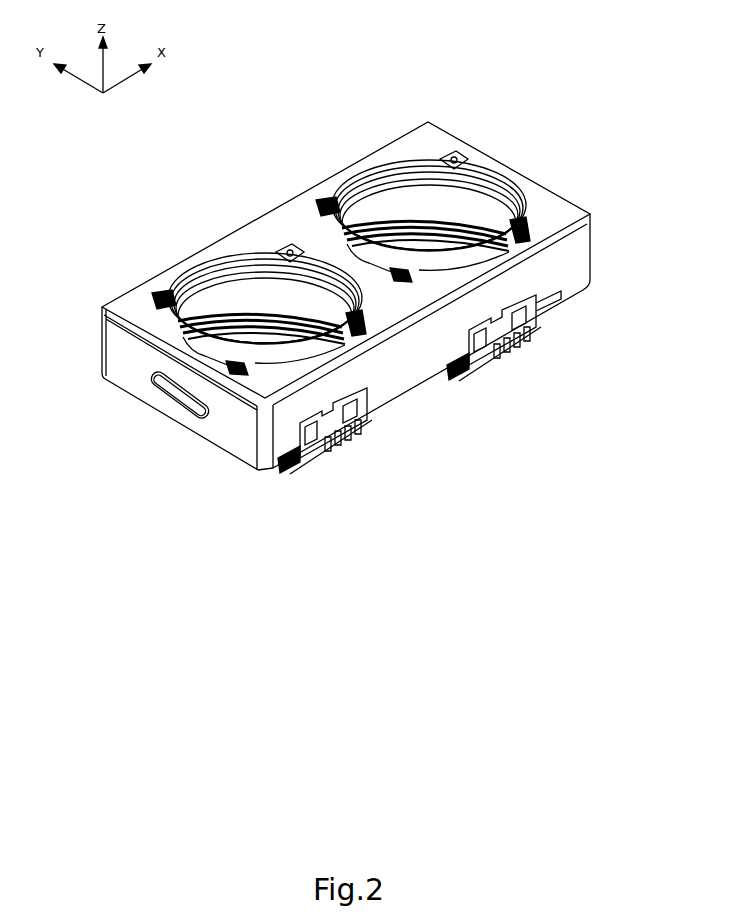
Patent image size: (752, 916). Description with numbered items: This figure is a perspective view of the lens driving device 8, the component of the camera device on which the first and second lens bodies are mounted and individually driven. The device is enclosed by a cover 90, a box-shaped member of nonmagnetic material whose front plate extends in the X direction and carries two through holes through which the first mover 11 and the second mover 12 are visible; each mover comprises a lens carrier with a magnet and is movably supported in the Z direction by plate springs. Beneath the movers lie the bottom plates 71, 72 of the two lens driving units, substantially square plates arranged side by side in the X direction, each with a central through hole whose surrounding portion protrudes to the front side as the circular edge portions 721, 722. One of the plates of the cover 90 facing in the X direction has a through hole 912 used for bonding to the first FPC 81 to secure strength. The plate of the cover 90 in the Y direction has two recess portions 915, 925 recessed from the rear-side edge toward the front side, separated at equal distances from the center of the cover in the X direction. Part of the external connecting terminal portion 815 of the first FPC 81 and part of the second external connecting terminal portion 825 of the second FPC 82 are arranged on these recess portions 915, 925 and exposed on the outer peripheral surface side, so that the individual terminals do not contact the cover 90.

The lens driving device 8 is at (273, 485).
The first mover 11 is at (267, 257).
The second mover 12 is at (520, 192).
The bottom plate 71 is at (244, 286).
The bottom plate 72 is at (437, 206).
The circular edge portion 721 is at (228, 327).
The circular edge portion 722 is at (385, 225).
The first FPC 81 is at (384, 437).
The second FPC 82 is at (552, 339).
The external connecting terminal portion 815 is at (352, 446).
The second external connecting terminal portion 825 is at (530, 335).
The cover 90 is at (434, 119).
The through hole 912 is at (174, 396).
The recess portion 915 is at (357, 445).
The recess portion 925 is at (520, 343).